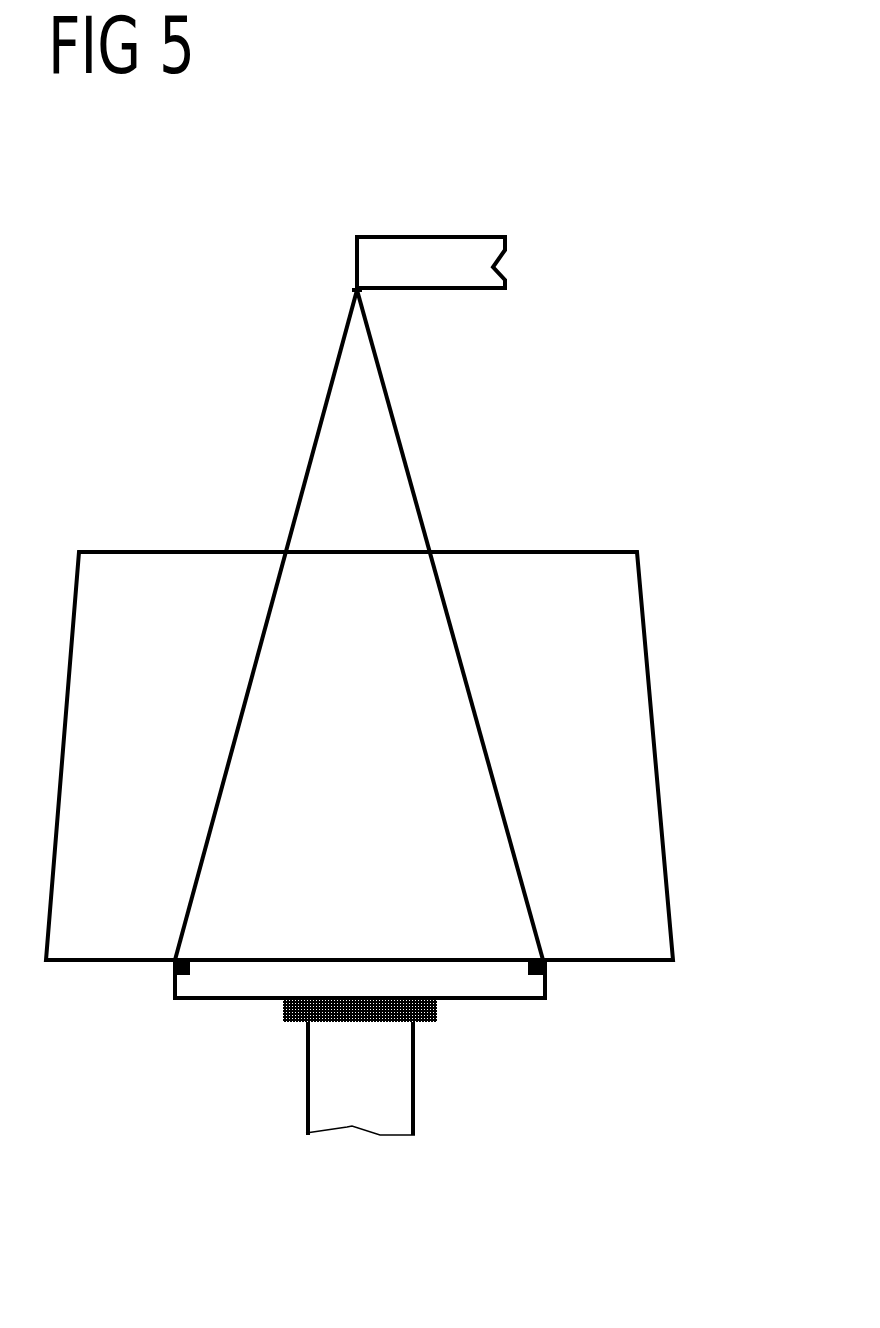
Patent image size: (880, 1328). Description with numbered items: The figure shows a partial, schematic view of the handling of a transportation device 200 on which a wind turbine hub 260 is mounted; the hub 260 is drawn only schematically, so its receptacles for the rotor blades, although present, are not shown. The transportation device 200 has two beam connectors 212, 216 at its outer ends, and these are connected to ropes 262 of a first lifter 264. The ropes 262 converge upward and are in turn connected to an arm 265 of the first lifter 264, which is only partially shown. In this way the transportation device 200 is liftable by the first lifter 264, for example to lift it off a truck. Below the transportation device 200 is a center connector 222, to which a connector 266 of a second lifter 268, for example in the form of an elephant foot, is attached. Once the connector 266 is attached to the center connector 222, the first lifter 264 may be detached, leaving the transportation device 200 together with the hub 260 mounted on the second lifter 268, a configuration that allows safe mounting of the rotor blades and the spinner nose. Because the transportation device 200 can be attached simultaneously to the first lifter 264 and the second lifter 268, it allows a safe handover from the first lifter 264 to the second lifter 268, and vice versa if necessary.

The transportation device 200 is at (215, 987).
The beam connector 212 is at (545, 968).
The beam connector 216 is at (173, 968).
The center connector 222 is at (293, 998).
The wind turbine hub 260 is at (632, 668).
The ropes 262 is at (325, 398).
The first lifter 264 is at (300, 272).
The arm 265 is at (433, 247).
The connector 266 is at (297, 1023).
The second lifter 268 is at (373, 1115).